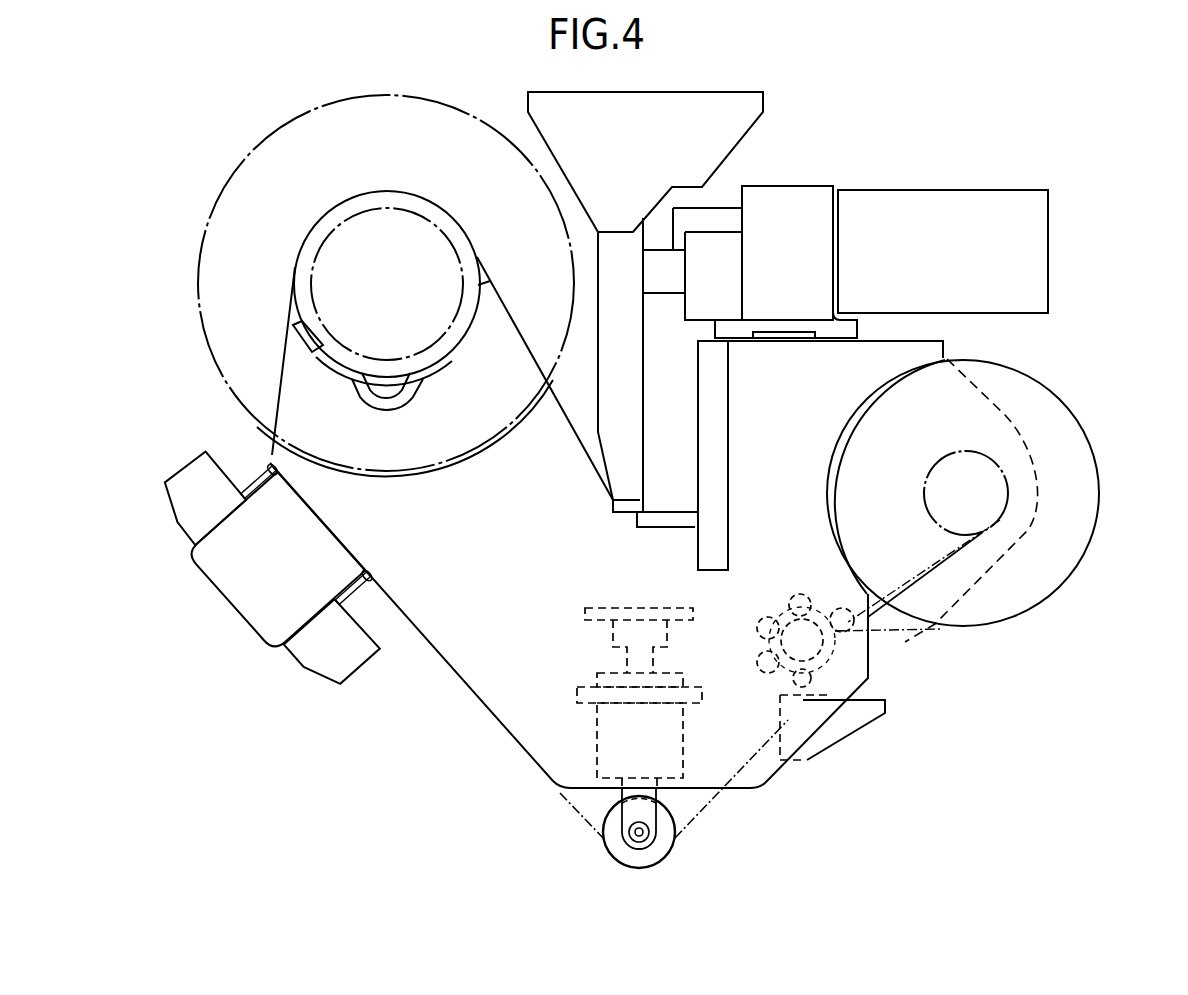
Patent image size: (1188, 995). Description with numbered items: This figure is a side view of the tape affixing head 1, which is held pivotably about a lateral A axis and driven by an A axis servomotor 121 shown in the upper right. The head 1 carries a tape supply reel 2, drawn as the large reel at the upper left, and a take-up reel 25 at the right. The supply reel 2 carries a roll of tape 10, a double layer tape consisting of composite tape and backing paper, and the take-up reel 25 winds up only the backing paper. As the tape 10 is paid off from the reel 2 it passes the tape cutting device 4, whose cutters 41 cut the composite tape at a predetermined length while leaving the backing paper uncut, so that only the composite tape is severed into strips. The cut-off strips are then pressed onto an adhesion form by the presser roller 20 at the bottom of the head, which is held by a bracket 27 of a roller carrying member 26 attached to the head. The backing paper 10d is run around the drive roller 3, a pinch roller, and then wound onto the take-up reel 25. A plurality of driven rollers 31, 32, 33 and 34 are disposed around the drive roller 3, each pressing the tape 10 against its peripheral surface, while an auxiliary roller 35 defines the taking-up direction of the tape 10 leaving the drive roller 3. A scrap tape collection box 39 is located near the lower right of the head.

The tape affixing head 1 is at (470, 685).
The tape supply reel 2 is at (212, 266).
The drive roller 3 is at (812, 645).
The tape cutting device 4 is at (208, 592).
The tape 10 is at (574, 811).
The backing paper 10d is at (703, 818).
The presser roller 20 is at (605, 843).
The take-up reel 25 is at (1060, 392).
The roller carrying member 26 is at (595, 730).
The bracket 27 is at (677, 838).
The driven roller 31 is at (787, 685).
The driven roller 32 is at (755, 657).
The driven roller 33 is at (771, 614).
The driven roller 34 is at (813, 592).
The auxiliary roller 35 is at (851, 605).
The scrap tape collection box 39 is at (873, 720).
The cutters 41 is at (264, 463).
The A axis servomotor 121 is at (953, 190).